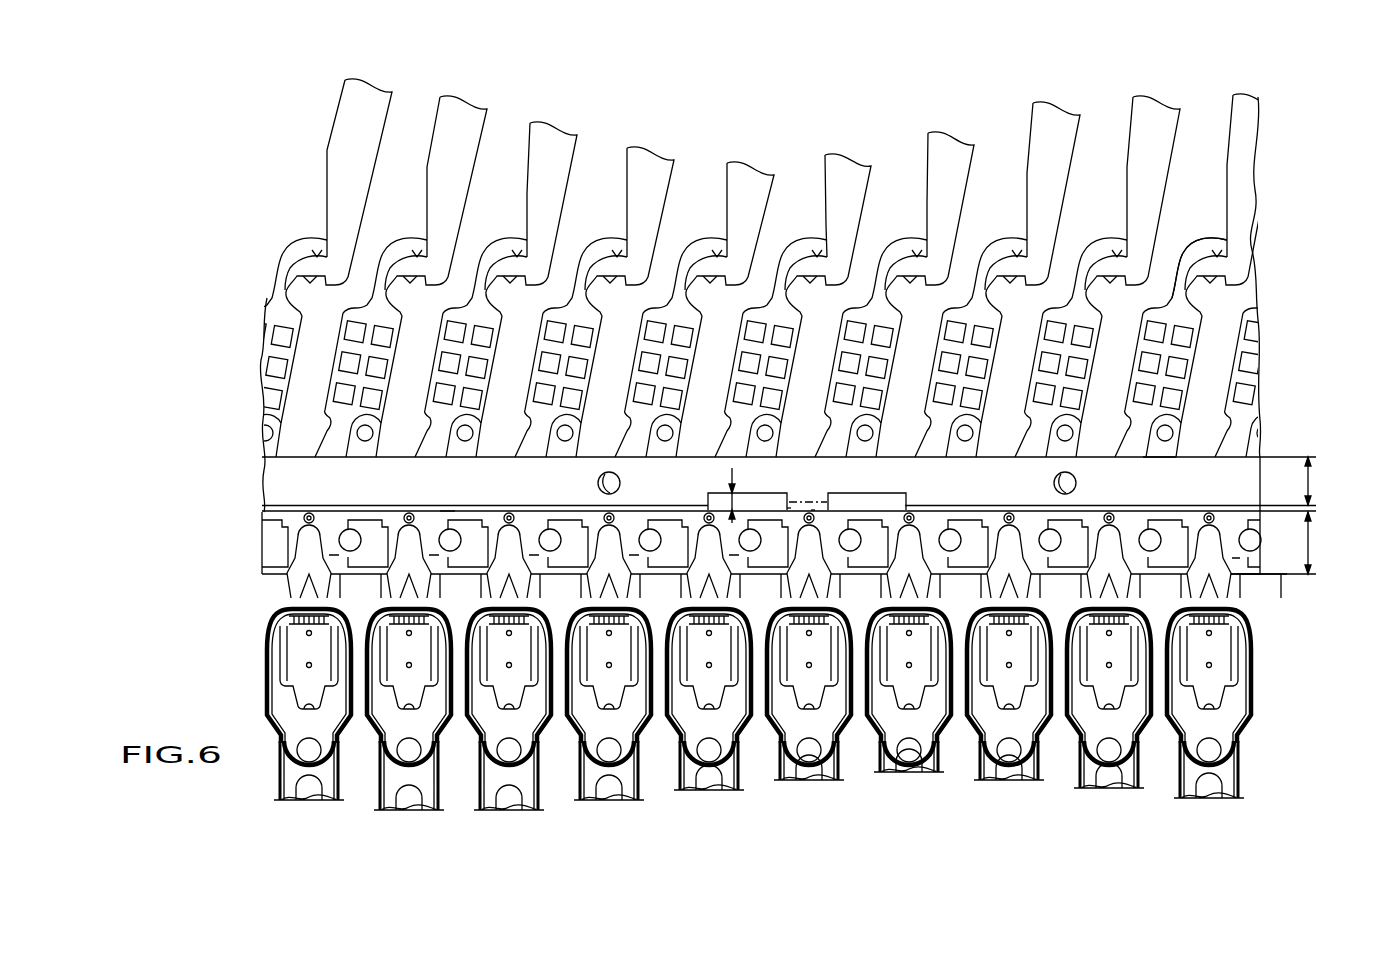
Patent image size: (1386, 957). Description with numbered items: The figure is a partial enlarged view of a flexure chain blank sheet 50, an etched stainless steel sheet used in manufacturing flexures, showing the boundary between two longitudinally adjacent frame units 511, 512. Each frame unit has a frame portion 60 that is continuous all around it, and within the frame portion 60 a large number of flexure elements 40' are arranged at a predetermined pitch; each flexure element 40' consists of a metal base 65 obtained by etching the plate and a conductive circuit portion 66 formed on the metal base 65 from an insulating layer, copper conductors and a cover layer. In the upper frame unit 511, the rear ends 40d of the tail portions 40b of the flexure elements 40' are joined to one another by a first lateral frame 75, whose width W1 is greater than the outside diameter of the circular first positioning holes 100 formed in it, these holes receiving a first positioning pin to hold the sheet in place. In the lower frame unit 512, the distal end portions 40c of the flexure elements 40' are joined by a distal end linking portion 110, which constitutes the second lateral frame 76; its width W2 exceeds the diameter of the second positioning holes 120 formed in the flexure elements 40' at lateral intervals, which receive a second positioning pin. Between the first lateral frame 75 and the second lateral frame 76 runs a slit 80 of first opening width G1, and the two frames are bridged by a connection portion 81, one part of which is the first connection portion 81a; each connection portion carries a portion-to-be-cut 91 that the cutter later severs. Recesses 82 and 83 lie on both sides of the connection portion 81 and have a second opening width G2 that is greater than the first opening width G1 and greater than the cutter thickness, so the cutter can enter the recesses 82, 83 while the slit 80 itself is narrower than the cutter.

The flexure element 40' is at (781, 477).
The tail portion 40b is at (1190, 308).
The distal end portion 40c is at (978, 573).
The rear end 40d is at (1160, 463).
The flexure chain blank sheet 50 is at (797, 110).
The frame unit 511 is at (1297, 131).
The frame unit 512 is at (1282, 776).
The frame portion 60 is at (1260, 587).
The metal base 65 is at (1236, 610).
The conductive circuit portion 66 is at (1248, 697).
The first lateral frame 75 is at (1230, 480).
The second lateral frame 76 is at (1241, 582).
The slit 80 is at (447, 511).
The connection portion 81 is at (803, 486).
The first connection portion 81a is at (813, 510).
The recess 82 is at (887, 493).
The recess 83 is at (718, 495).
The portion-to-be-cut 91 is at (813, 490).
The first positioning hole 100 is at (599, 483).
The distal end linking portion 110 is at (344, 552).
The second positioning hole 120 is at (647, 537).
The first opening width G1 is at (1310, 508).
The second opening width G2 is at (736, 497).
The width of the first lateral frame W1 is at (1310, 481).
The width of the second lateral frame W2 is at (1310, 541).